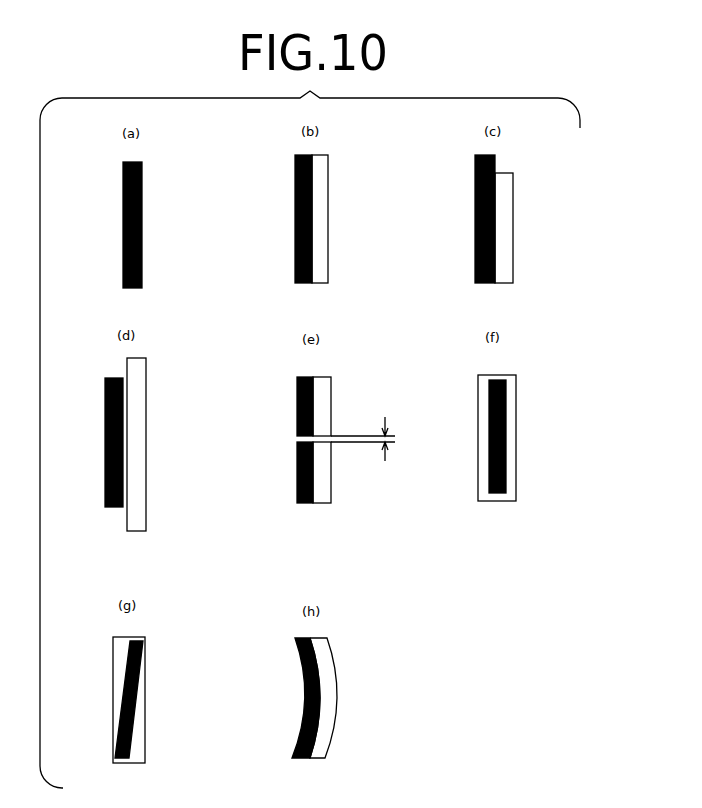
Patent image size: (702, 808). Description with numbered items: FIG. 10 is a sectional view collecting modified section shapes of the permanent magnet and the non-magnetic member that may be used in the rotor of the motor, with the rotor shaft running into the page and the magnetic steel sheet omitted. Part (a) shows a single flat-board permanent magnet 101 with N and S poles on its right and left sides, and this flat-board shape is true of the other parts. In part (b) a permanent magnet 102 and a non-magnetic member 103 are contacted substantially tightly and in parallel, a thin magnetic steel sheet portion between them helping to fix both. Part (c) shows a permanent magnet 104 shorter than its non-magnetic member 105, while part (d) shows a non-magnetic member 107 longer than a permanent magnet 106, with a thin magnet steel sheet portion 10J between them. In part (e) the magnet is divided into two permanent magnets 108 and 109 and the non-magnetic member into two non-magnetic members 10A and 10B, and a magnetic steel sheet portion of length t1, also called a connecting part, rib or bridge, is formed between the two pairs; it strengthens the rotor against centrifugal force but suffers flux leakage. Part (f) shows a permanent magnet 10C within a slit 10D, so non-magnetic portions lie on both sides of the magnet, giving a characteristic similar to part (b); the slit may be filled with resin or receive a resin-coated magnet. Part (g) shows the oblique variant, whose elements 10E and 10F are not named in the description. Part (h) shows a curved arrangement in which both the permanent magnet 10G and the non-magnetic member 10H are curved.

The permanent magnet 101 is at (123, 178).
The permanent magnet 102 is at (295, 176).
The non-magnetic member 103 is at (322, 184).
The permanent magnet 104 is at (475, 185).
The non-magnetic member 105 is at (507, 180).
The permanent magnet 106 is at (105, 407).
The non-magnetic member 107 is at (138, 428).
The magnet steel sheet portion 10J is at (122, 444).
The permanent magnet 108 is at (297, 392).
The permanent magnet 109 is at (297, 454).
The non-magnetic member 10A is at (321, 401).
The non-magnetic member 10B is at (321, 469).
The length of magnetic steel sheet portion t1 is at (363, 430).
The permanent magnet 10C is at (501, 437).
The slit 10D is at (512, 398).
The tilted magnet 10E is at (127, 664).
The housing 10F is at (138, 736).
The permanent magnet 10G is at (300, 660).
The non-magnetic member 10H is at (322, 662).